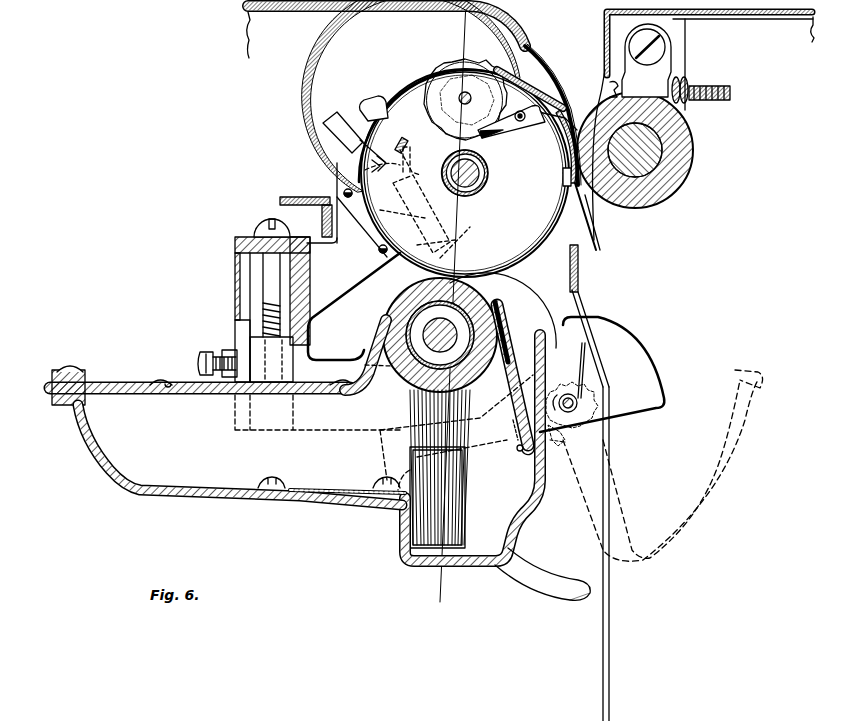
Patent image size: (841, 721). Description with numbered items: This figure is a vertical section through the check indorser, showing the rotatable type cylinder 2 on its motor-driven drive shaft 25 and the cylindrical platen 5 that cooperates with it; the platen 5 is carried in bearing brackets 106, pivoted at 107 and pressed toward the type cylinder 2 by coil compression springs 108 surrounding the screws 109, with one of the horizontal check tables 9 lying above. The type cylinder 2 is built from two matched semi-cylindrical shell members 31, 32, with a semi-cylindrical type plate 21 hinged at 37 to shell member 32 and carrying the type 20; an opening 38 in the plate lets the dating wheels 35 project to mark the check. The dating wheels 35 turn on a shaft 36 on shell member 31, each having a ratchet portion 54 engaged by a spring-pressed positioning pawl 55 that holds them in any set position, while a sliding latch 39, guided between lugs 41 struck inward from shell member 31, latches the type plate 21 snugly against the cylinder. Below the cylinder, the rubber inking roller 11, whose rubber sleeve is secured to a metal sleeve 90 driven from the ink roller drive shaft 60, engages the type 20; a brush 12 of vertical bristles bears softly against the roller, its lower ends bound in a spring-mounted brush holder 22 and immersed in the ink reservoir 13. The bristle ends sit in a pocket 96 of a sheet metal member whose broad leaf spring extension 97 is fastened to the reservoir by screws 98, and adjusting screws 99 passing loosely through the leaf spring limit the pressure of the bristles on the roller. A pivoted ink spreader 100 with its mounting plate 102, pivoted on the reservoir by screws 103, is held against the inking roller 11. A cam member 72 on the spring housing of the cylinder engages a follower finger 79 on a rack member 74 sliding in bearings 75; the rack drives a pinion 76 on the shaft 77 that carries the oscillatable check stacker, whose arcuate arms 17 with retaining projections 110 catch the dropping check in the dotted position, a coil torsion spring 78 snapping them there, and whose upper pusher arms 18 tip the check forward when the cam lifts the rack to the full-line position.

The type cylinder 2 is at (524, 267).
The cylindrical platen 5 is at (690, 155).
The table 9 is at (292, 15).
The inking roller 11 is at (432, 300).
The brush 12 is at (420, 404).
The ink reservoir 13 is at (205, 500).
The arcuate arms 17 is at (543, 590).
The upper pusher arms 18 is at (660, 408).
The type 20 is at (506, 70).
The type plate 21 is at (410, 72).
The brush holder 22 is at (466, 513).
The drive shaft 25 is at (480, 175).
The semi-cylindrical shell member 31 is at (340, 163).
The semi-cylindrical shell member 32 is at (562, 216).
The dating wheels 35 is at (436, 112).
The shaft 36 is at (470, 92).
The hinged connection 37 is at (562, 170).
The opening 38 is at (436, 66).
The latch 39 is at (385, 94).
The lugs 41 is at (404, 128).
The ratchet portion 54 is at (473, 106).
The positioning pawl 55 is at (497, 138).
The ink roller drive shaft 60 is at (400, 310).
The cam member 72 is at (418, 158).
The rack member 74 is at (447, 257).
The bearings 75 is at (326, 154).
The pinion 76 is at (606, 385).
The shaft 77 is at (567, 392).
The coil torsion spring 78 is at (590, 372).
The follower finger 79 is at (403, 184).
The metal sleeve 90 is at (378, 345).
The pocket 96 is at (482, 530).
The leaf spring extension 97 is at (347, 518).
The screws 98 is at (272, 477).
The adjusting screws 99 is at (377, 480).
The ink spreader 100 is at (510, 338).
The mounting plate 102 is at (516, 452).
The pivot screws 103 is at (513, 470).
The bearing brackets 106 is at (665, 72).
The pivot 107 is at (660, 39).
The coil compression springs 108 is at (686, 82).
The screws 109 is at (604, 76).
The retaining projections 110 is at (735, 372).